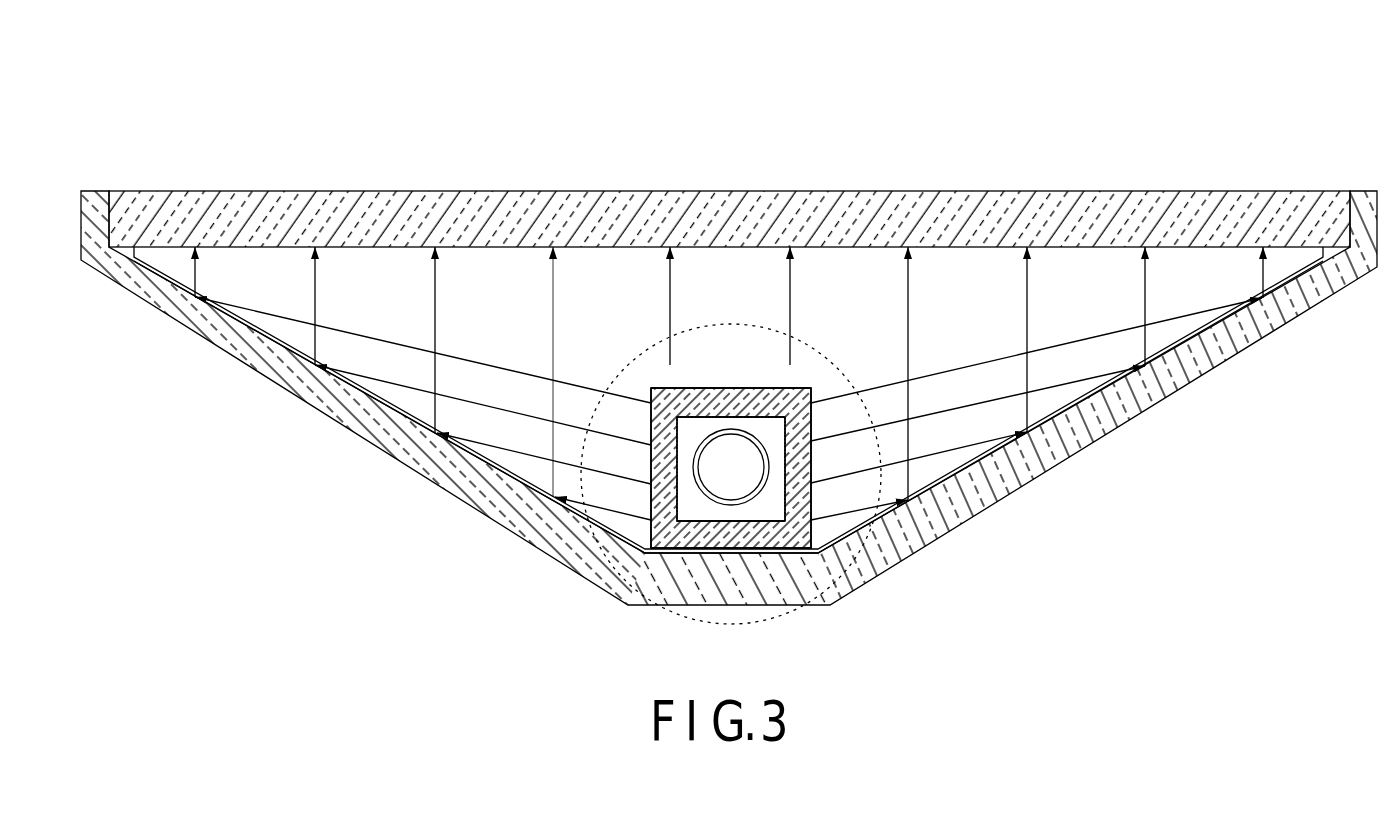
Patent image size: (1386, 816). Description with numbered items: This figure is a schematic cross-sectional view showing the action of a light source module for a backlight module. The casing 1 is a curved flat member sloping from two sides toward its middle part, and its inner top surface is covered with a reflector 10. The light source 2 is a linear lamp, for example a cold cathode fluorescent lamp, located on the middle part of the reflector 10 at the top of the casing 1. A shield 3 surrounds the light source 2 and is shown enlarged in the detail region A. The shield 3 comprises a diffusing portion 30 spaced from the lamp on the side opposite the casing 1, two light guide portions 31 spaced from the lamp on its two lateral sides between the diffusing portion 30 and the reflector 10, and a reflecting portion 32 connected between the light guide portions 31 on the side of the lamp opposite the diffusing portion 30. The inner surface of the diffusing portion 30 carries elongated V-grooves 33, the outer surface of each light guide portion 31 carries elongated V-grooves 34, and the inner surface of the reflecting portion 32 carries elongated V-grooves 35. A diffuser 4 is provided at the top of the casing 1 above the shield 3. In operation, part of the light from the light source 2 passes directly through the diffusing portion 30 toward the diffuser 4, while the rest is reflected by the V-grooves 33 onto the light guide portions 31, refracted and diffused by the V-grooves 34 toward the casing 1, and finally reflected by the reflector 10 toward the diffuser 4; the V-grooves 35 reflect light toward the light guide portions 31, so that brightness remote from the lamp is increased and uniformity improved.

The casing 1 is at (323, 421).
The reflector 10 is at (300, 352).
The light source 2 is at (700, 500).
The shield 3 is at (638, 459).
The diffusing portion 30 is at (705, 410).
The light guide portions 31 is at (668, 458).
The reflecting portion 32 is at (714, 535).
The V-grooves 33 is at (745, 400).
The V-grooves 34 is at (653, 440).
The V-grooves 35 is at (770, 525).
The diffuser 4 is at (1125, 208).
The detail region A is at (535, 548).